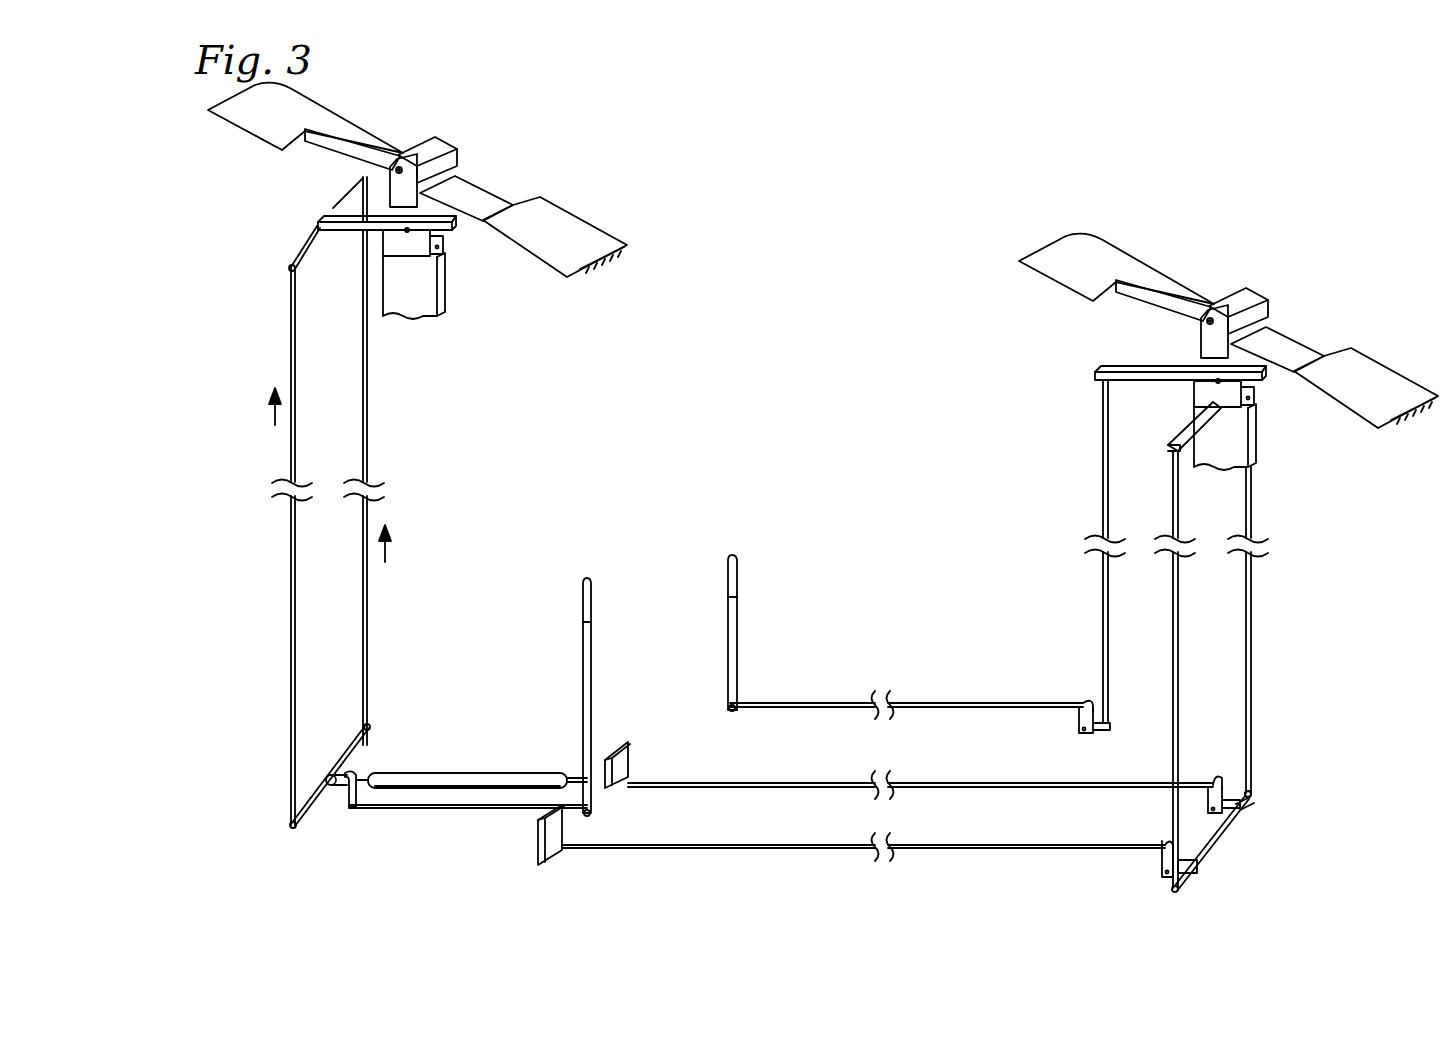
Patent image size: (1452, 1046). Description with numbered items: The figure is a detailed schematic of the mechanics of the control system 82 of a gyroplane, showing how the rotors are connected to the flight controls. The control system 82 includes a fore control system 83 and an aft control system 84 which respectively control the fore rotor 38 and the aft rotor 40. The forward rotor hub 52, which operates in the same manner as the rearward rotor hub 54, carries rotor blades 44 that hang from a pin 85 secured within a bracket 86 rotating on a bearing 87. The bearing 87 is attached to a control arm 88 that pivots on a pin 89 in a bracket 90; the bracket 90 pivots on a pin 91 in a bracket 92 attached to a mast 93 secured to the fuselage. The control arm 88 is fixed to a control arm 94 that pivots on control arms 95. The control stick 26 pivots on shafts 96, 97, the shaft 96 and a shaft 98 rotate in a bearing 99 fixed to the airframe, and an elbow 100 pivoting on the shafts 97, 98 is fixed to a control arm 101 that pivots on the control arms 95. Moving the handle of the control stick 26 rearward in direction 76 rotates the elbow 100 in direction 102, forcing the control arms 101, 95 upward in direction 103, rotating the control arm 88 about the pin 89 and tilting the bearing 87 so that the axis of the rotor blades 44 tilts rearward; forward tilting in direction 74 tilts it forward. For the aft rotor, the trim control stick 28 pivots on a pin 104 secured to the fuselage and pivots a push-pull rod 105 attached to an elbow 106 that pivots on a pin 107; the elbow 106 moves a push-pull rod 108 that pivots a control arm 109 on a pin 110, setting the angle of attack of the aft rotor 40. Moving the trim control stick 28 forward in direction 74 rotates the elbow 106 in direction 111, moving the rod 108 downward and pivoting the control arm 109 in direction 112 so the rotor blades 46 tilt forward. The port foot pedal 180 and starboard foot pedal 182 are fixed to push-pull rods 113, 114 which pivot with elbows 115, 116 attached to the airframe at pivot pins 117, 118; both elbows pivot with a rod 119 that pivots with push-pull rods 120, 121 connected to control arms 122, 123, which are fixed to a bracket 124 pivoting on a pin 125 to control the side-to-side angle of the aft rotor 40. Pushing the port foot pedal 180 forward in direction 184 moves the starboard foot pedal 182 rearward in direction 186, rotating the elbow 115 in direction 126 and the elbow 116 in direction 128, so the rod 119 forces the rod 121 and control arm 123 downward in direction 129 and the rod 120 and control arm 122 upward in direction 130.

The control stick 26 is at (583, 600).
The trim control stick 28 is at (737, 575).
The fore rotor 38 is at (600, 208).
The aft rotor 40 is at (1395, 355).
The rotor blades 44 is at (468, 187).
The rotor blades 46 is at (1355, 360).
The forward rotor hub 52 is at (468, 130).
The rearward rotor hub 54 is at (1262, 272).
The forward direction 74 is at (690, 570).
The rearward direction 76 is at (602, 595).
The control system 82 is at (855, 255).
The fore control system 83 is at (597, 152).
The aft control system 84 is at (1218, 240).
The pin 85 is at (390, 165).
The bracket 86 is at (397, 185).
The bearing 87 is at (423, 212).
The control arm 88 is at (330, 216).
The pin 89 is at (405, 232).
The bracket 90 is at (412, 247).
The pin 91 is at (440, 245).
The bracket 92 is at (437, 250).
The mast 93 is at (425, 312).
The control arm 94 is at (305, 247).
The control arms 95 is at (296, 430).
The shaft 96 is at (577, 780).
The shaft 97 is at (455, 808).
The shaft 98 is at (352, 772).
The bearing 99 is at (493, 780).
The elbow 100 is at (338, 797).
The control arm 101 is at (340, 763).
The direction 102 is at (377, 797).
The upward direction 103 is at (275, 408).
The pin 104 is at (737, 612).
The push-pull rod 105 is at (795, 703).
The elbow 106 is at (1095, 702).
The pin 107 is at (1085, 734).
The push-pull rod 108 is at (1104, 496).
The control arm 109 is at (1180, 378).
The pin 110 is at (1245, 418).
The direction 111 is at (1056, 724).
The direction 112 is at (1079, 378).
The push-pull rod 113 is at (790, 845).
The push-pull rod 114 is at (790, 783).
The elbow 115 is at (1197, 868).
The elbow 116 is at (1250, 800).
The pivot pin 117 is at (1162, 876).
The pivot pin 118 is at (1222, 780).
The rod 119 is at (1225, 836).
The push-pull rod 120 is at (1178, 508).
The push-pull rod 121 is at (1251, 516).
The control arm 122 is at (1168, 438).
The control arm 123 is at (1300, 328).
The bracket 124 is at (1218, 389).
The pin 125 is at (1252, 398).
The direction 126 is at (1146, 862).
The direction 128 is at (1195, 807).
The downward direction 129 is at (1262, 632).
The upward direction 130 is at (1150, 582).
The port foot pedal 180 is at (558, 852).
The starboard foot pedal 182 is at (628, 760).
The forward direction 184 is at (527, 880).
The rearward direction 186 is at (610, 725).